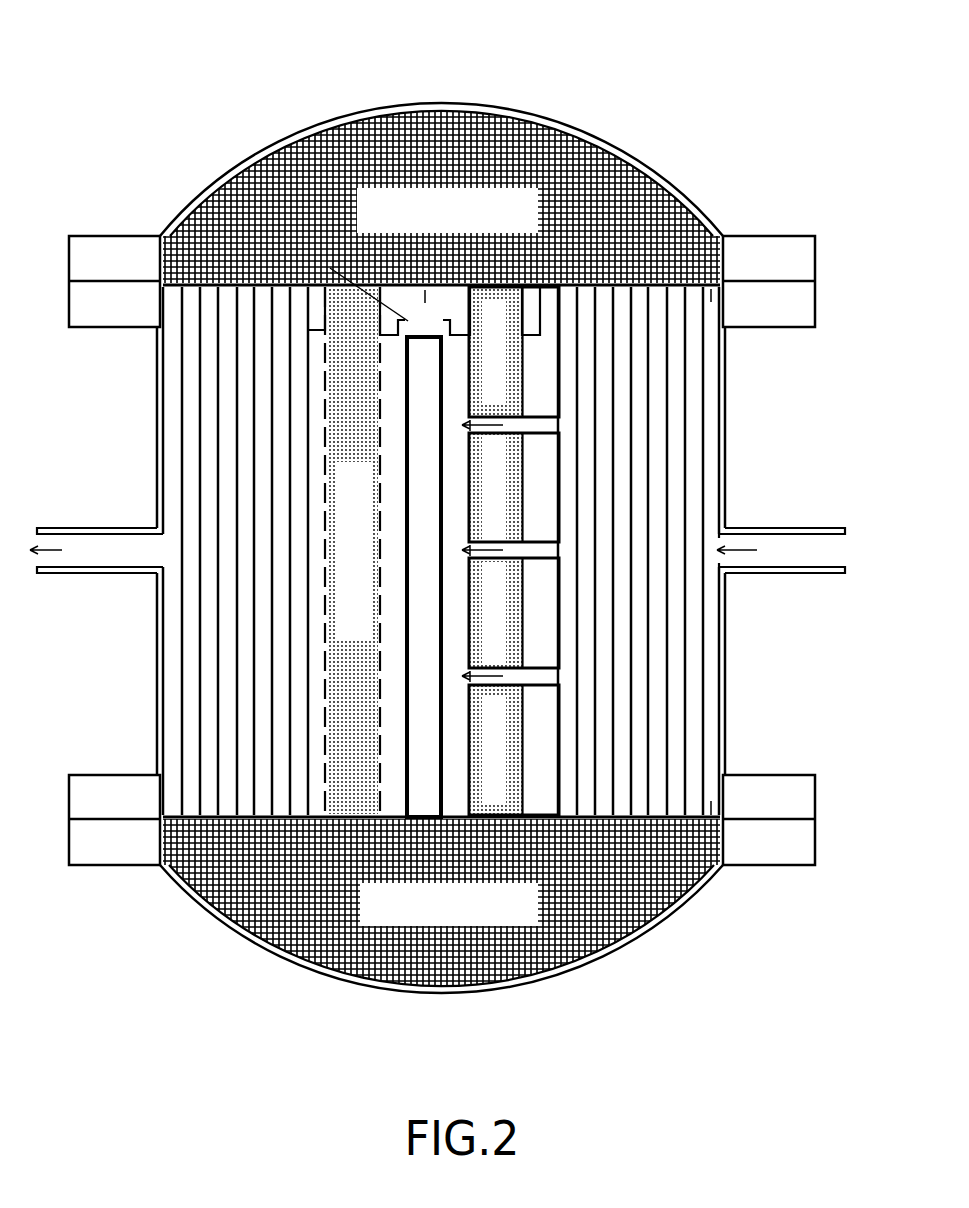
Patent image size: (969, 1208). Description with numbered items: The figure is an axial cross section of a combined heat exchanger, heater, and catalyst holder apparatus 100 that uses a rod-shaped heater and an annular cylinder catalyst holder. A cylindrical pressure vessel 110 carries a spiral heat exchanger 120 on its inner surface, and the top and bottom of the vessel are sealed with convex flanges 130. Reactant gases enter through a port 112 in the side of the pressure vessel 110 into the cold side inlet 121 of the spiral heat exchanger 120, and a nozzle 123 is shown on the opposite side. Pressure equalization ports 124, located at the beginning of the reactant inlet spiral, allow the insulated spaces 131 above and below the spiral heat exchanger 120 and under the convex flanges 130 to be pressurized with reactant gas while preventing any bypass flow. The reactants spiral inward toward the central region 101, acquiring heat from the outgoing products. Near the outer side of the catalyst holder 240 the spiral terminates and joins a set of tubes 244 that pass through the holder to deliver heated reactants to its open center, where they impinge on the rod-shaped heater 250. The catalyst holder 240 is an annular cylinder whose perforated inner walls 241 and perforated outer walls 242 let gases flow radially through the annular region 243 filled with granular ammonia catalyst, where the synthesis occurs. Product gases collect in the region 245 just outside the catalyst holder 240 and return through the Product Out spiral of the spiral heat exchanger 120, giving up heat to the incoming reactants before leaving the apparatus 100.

The apparatus 100 is at (440, 515).
The central region 101 is at (203, 192).
The cylindrical pressure vessel 110 is at (727, 390).
The port 112 is at (822, 562).
The spiral heat exchanger 120 is at (200, 655).
The cold side inlet 121 is at (723, 543).
The outlet nozzle 123 is at (158, 545).
The pressure equalization ports 124 is at (705, 207).
The convex flanges 130 is at (725, 235).
The insulated spaces 131 is at (320, 150).
The catalyst holder 240 is at (200, 905).
The perforated inner walls 241 is at (380, 705).
The perforated outer walls 242 is at (325, 665).
The annular region 243 is at (350, 370).
The tubes 244 is at (555, 677).
The region 245 is at (315, 468).
The heater 250 is at (427, 777).